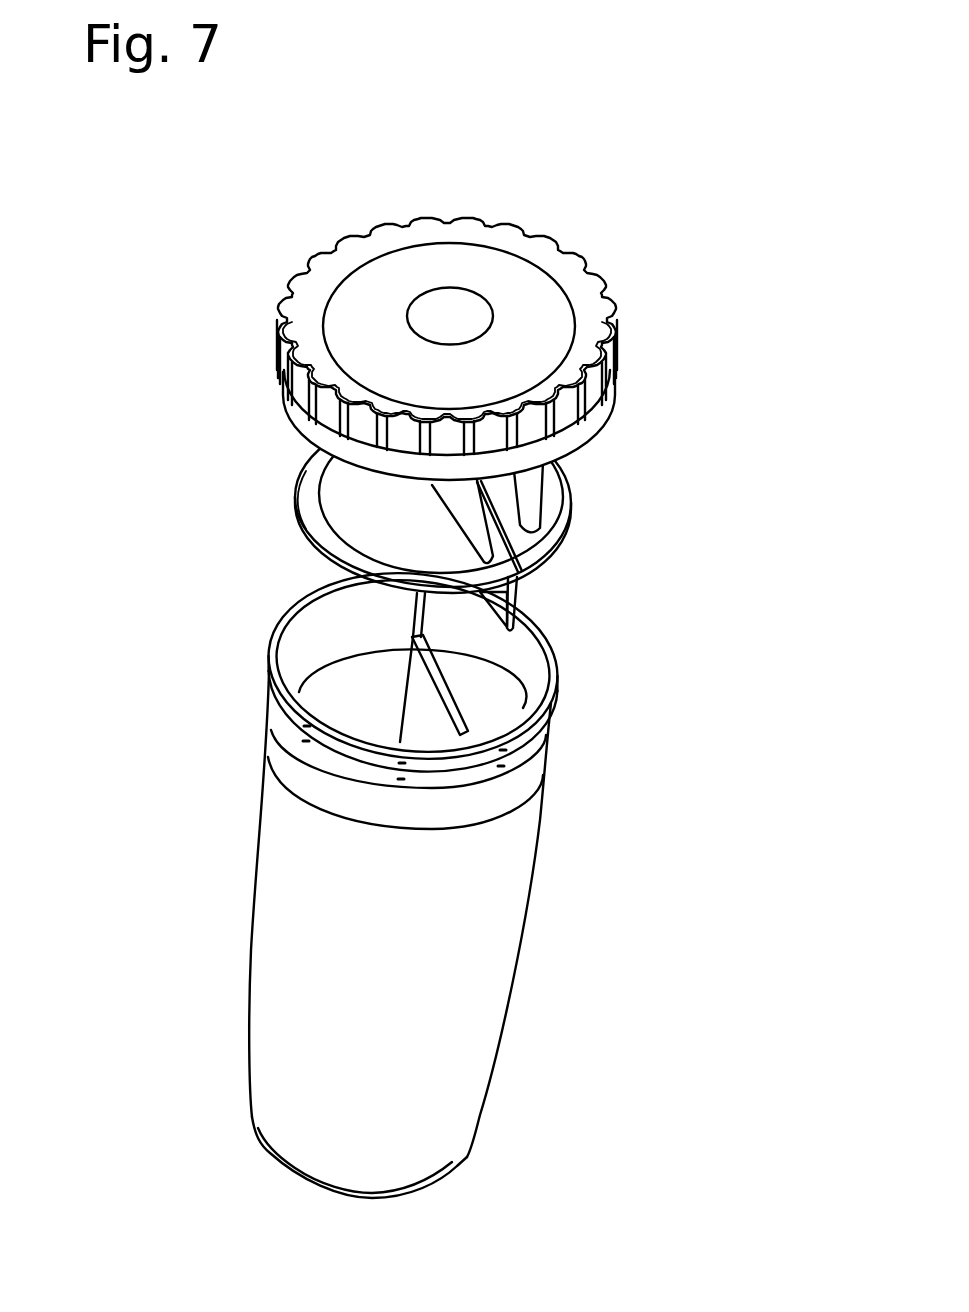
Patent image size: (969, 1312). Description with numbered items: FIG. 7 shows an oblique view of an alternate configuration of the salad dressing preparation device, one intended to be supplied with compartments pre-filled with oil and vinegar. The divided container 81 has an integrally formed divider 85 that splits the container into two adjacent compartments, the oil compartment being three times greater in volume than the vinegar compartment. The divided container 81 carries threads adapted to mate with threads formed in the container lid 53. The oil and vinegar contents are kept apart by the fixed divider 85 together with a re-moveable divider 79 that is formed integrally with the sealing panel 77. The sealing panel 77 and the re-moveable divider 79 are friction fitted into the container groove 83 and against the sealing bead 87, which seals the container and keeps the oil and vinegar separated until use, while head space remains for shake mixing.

The container lid 53 is at (597, 242).
The sealing panel 77 is at (583, 483).
The re-moveable divider 79 is at (517, 593).
The divided container 81 is at (263, 605).
The container groove 83 is at (418, 620).
The divider 85 is at (458, 710).
The sealing bead 87 is at (293, 485).